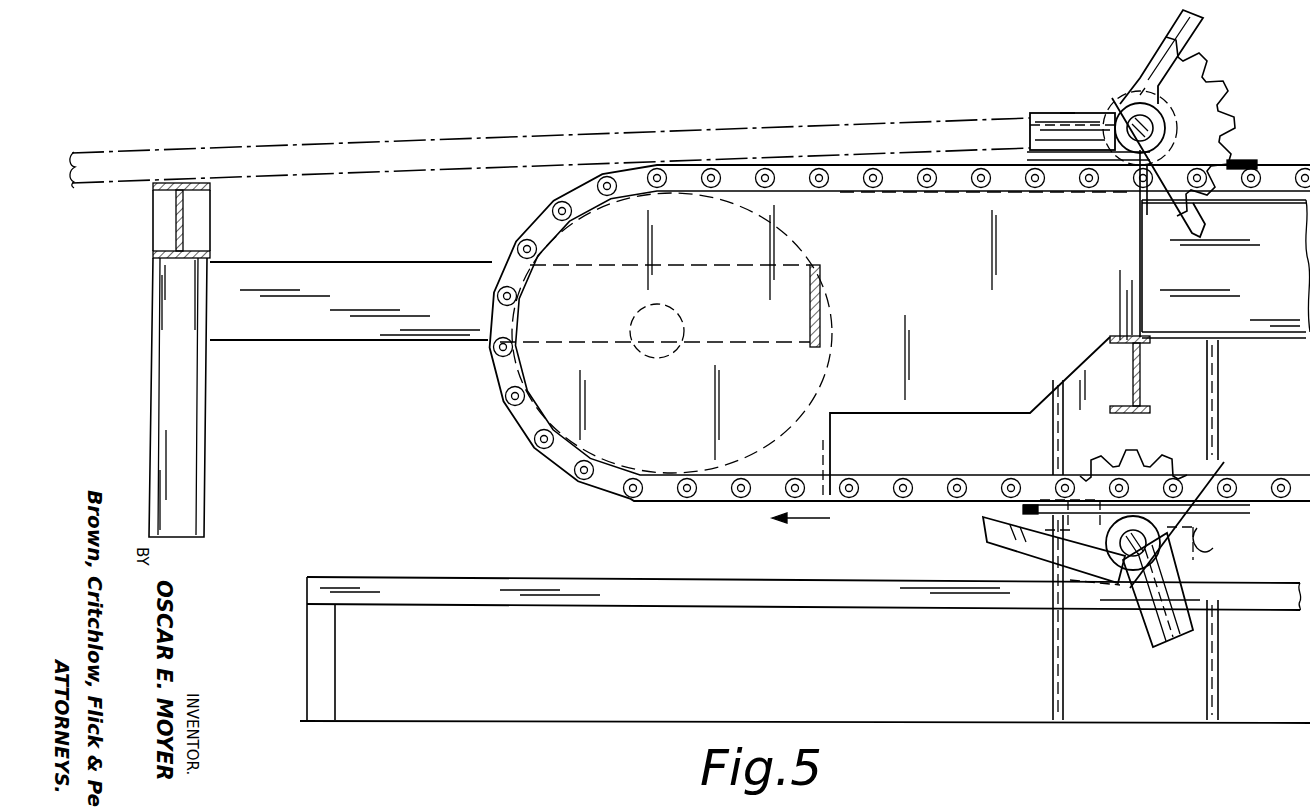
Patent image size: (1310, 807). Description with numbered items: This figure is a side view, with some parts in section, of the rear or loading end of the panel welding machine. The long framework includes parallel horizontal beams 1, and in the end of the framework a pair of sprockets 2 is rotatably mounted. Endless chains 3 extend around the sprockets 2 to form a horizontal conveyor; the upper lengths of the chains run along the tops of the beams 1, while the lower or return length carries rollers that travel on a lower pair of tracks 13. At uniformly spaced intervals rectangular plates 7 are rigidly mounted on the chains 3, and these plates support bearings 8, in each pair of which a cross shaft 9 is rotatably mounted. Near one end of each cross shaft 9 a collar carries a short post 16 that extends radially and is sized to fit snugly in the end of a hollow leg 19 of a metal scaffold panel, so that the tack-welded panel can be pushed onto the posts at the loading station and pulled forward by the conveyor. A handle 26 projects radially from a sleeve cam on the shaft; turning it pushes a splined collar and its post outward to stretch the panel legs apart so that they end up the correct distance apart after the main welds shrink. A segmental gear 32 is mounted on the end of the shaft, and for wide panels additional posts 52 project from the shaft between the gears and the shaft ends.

The horizontal beam 1 is at (1259, 277).
The sprocket 2 is at (834, 349).
The endless chain 3 is at (893, 495).
The rectangular plate 7 is at (1262, 150).
The bearing 8 is at (1122, 100).
The cross shaft 9 is at (1147, 125).
The lower track 13 is at (930, 603).
The short post 16 is at (1068, 113).
The hollow leg 19 is at (484, 152).
The handle 26 is at (1198, 28).
The segmental gear 32 is at (1240, 96).
The post 52 is at (1042, 113).